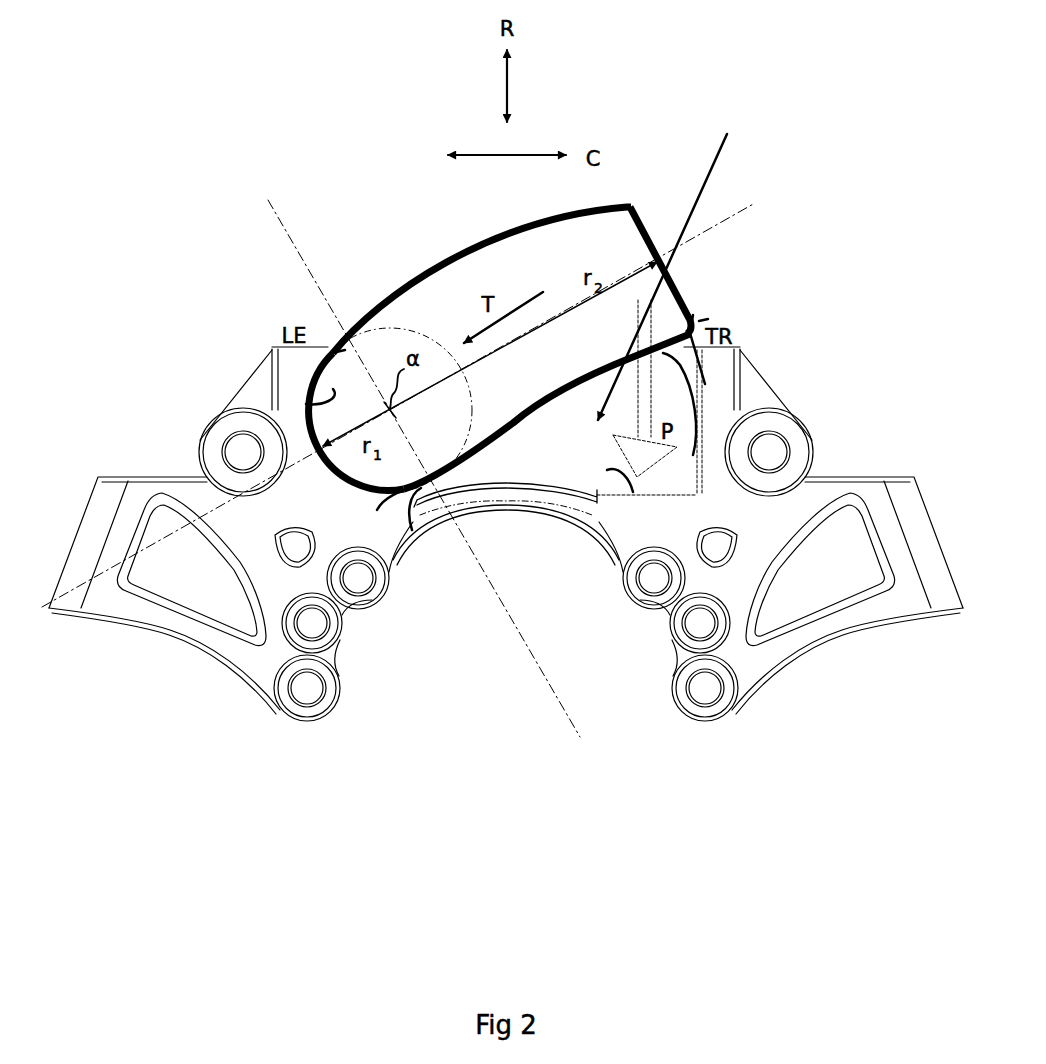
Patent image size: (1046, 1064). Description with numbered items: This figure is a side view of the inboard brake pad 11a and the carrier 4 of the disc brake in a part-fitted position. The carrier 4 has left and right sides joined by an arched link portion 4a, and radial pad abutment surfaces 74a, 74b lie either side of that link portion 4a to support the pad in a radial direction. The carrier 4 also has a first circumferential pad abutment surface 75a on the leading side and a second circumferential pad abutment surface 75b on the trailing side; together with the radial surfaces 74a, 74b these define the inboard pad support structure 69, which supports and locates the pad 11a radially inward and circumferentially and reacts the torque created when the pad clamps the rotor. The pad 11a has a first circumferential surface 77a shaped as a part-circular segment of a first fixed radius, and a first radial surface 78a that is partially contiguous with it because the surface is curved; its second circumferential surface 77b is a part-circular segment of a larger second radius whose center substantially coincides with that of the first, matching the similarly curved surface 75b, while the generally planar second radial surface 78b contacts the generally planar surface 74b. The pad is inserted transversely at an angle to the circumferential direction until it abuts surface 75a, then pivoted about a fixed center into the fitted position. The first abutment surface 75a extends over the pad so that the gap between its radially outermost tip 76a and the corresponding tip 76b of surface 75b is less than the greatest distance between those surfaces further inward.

The inboard pad support structure 69 is at (668, 264).
The inboard brake pad 11a is at (548, 351).
The first circumferential surface of the brake pad 77a is at (388, 488).
The second circumferential surface of the brake pad 77b is at (680, 282).
The radially outermost tip of the first circumferential abutment surface 76a is at (345, 350).
The tip of the second circumferential abutment surface 76b is at (708, 319).
The first circumferential pad abutment surface 75a is at (333, 389).
The second circumferential pad abutment surface 75b is at (693, 315).
The carrier 4 is at (754, 393).
The link portion 4a is at (483, 483).
The first radial surface of the brake pad 78a is at (377, 510).
The second radial surface of the brake pad 78b is at (693, 455).
The first radial pad abutment surface 74a is at (412, 530).
The second radial pad abutment surface 74b is at (607, 470).